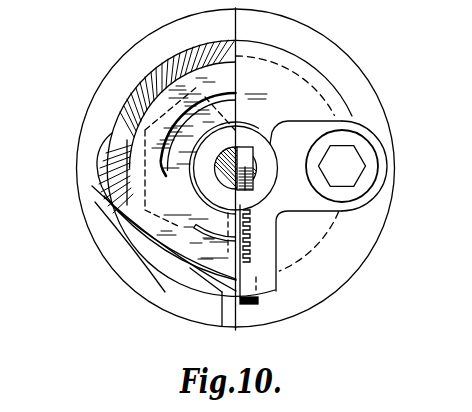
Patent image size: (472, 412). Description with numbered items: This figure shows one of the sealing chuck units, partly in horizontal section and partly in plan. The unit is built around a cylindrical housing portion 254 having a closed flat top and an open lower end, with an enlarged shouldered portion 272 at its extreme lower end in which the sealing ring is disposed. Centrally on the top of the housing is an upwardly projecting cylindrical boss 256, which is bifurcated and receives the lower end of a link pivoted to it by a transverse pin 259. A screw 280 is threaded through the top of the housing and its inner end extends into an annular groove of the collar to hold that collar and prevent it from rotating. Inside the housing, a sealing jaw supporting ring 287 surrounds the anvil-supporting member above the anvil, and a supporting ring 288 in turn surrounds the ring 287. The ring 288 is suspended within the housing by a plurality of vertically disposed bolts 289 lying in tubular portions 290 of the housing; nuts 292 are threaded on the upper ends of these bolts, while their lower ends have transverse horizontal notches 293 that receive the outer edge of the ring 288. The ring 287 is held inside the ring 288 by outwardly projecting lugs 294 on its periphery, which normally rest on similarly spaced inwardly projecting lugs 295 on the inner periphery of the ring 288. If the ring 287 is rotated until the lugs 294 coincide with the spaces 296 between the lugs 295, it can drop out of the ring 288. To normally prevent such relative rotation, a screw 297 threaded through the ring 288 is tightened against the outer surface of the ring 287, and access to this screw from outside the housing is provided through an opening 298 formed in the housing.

The cylindrical housing portion 254 is at (336, 88).
The cylindrical boss 256 is at (257, 140).
The transverse pin 259 is at (251, 158).
The enlarged shouldered portion 272 is at (110, 77).
The screw 280 is at (250, 230).
The sealing jaw supporting ring 287 is at (186, 112).
The supporting ring 288 is at (157, 107).
The bolts 289 is at (106, 173).
The tubular portions 290 is at (104, 136).
The nuts 292 is at (351, 165).
The notches 293 is at (126, 164).
The outwardly projecting lugs 294 is at (195, 204).
The inwardly projecting lugs 295 is at (215, 228).
The spaces 296 is at (225, 234).
The screw 297 is at (236, 322).
The opening 298 is at (215, 278).